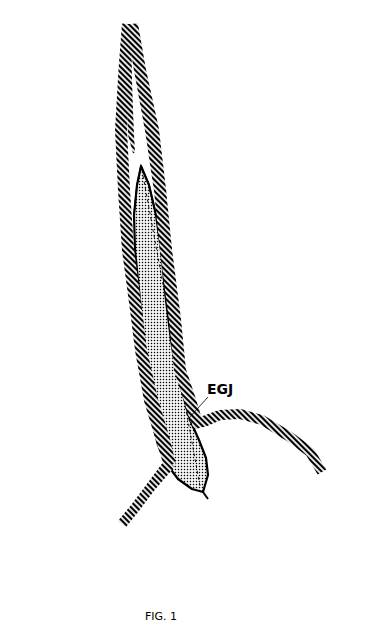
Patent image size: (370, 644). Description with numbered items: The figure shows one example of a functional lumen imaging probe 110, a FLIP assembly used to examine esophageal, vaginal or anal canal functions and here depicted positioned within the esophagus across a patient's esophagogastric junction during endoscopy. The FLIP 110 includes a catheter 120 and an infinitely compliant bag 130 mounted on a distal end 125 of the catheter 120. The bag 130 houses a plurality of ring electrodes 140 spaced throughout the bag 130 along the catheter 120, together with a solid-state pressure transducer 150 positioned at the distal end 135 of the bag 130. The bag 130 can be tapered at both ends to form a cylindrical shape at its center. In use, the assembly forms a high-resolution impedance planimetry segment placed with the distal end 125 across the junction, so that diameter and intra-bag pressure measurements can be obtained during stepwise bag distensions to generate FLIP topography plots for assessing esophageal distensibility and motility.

The functional lumen imaging probe 110 is at (107, 117).
The catheter 120 is at (135, 152).
The infinitely compliant bag 130 is at (126, 254).
The ring electrodes 140 is at (150, 318).
The solid-state pressure transducer 150 is at (208, 494).
The distal end of the catheter 125 is at (200, 500).
The distal end of the bag 135 is at (155, 459).